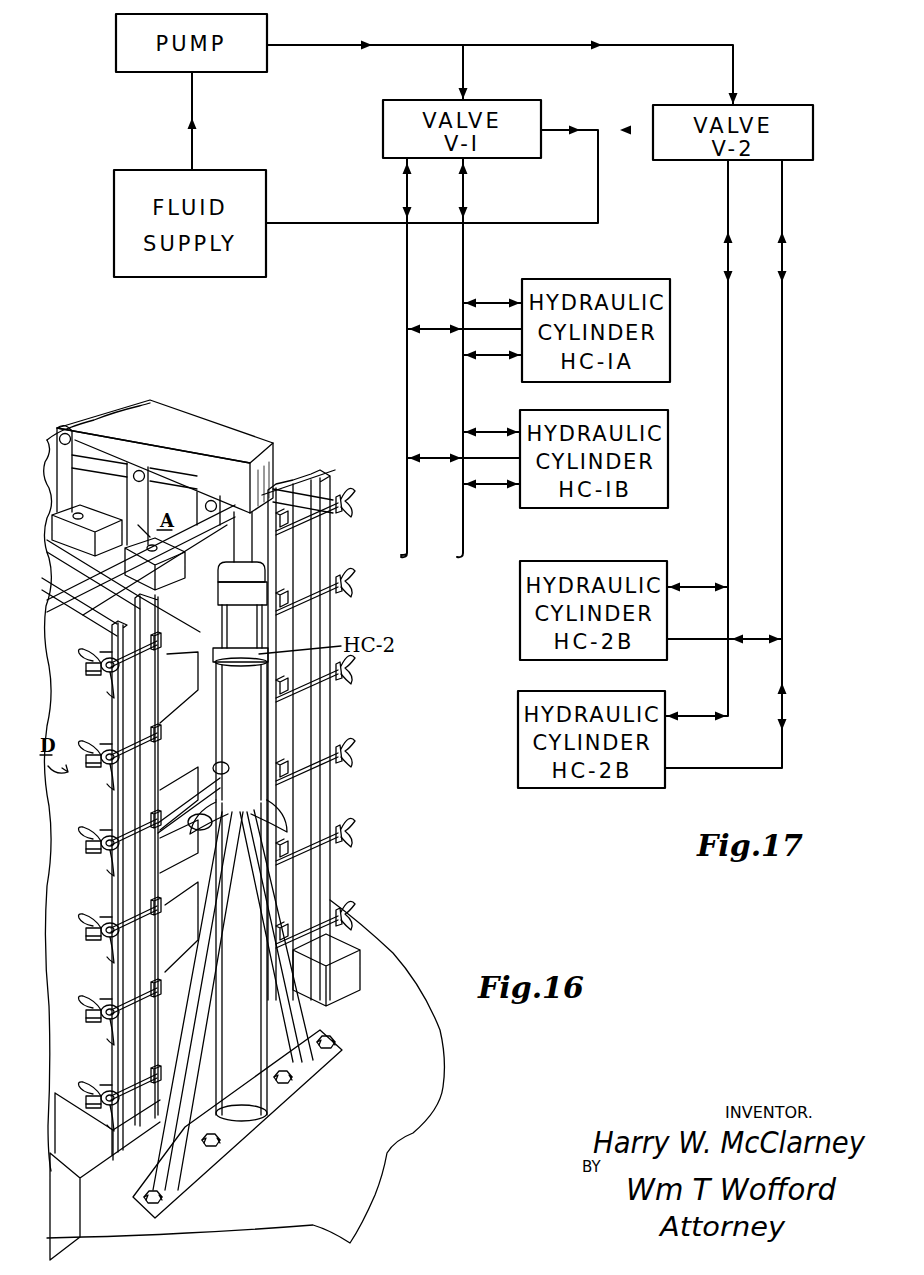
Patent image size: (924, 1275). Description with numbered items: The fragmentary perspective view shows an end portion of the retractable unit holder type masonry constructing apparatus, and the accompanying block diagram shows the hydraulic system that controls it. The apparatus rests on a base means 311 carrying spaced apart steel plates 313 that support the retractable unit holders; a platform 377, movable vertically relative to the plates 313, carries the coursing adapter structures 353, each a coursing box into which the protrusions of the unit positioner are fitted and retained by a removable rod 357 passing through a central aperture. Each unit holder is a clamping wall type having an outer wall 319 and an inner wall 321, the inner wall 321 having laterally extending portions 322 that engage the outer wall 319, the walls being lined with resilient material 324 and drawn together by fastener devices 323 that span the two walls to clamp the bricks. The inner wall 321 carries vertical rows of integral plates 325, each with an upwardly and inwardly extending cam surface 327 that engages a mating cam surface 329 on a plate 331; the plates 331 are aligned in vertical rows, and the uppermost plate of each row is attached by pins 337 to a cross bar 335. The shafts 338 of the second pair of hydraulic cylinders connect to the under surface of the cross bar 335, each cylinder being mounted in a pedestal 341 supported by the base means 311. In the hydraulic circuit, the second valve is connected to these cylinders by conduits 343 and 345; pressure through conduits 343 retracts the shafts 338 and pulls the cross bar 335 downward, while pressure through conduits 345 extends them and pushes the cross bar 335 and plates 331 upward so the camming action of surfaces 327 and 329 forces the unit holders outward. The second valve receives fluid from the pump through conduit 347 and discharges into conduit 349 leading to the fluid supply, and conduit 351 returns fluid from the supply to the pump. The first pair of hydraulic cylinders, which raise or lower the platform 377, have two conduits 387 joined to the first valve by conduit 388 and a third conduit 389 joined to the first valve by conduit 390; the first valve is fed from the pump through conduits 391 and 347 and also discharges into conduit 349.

In FIG. 16, the base means 311 is at (178, 1190).
In FIG. 16, the steel plates 313 is at (160, 1191).
In FIG. 16, the outer wall 319 is at (110, 800).
In FIG. 16, the inner wall 321 is at (120, 605).
In FIG. 16, the laterally extending portions 322 is at (127, 608).
In FIG. 16, the fastener devices 323 is at (100, 748).
In FIG. 16, the resilient material 324 is at (100, 652).
In FIG. 16, the integral plates 325 is at (167, 601).
In FIG. 16, the cam surface 327 is at (156, 626).
In FIG. 16, the mating cam surface 329 is at (142, 630).
In FIG. 16, the plates 331 is at (187, 660).
In FIG. 16, the cross bar 335 is at (206, 420).
In FIG. 16, the pins 337 is at (144, 478).
In FIG. 16, the shafts 338 is at (244, 514).
In FIG. 16, the pedestal 341 is at (250, 774).
In FIG. 17, the conduits 343 is at (728, 195).
In FIG. 17, the conduits 345 is at (782, 434).
In FIG. 17, the conduit 347 is at (570, 48).
In FIG. 17, the conduit 349 is at (373, 222).
In FIG. 17, the conduit 351 is at (192, 110).
In FIG. 16, the coursing adapter structure 353 is at (75, 512).
In FIG. 16, the removable rod 357 is at (133, 548).
In FIG. 16, the platform 377 is at (206, 1037).
In FIG. 17, the conduits 387 is at (478, 300).
In FIG. 17, the conduit 388 is at (463, 256).
In FIG. 17, the conduit 389 is at (478, 328).
In FIG. 17, the conduit 390 is at (407, 270).
In FIG. 17, the conduit 391 is at (463, 74).